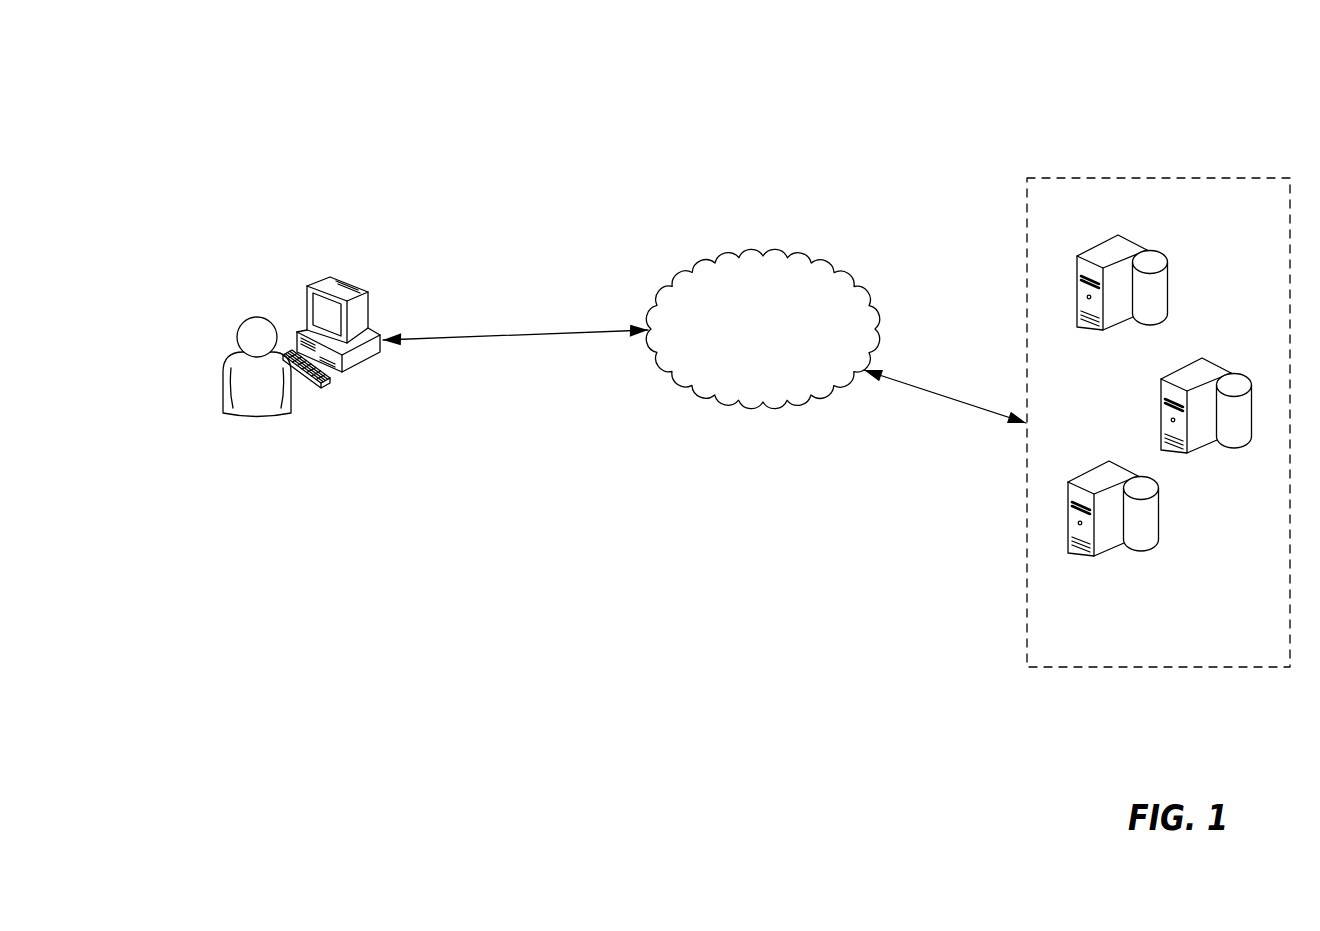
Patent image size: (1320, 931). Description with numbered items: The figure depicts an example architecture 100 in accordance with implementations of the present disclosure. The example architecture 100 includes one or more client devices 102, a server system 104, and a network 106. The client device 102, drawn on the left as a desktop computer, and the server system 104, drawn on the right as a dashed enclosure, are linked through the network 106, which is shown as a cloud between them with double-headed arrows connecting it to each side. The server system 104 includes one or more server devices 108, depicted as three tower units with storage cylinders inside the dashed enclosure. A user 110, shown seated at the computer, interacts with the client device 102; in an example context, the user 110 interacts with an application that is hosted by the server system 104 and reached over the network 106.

The architecture 100 is at (405, 108).
The client device 102 is at (306, 288).
The server system 104 is at (1160, 178).
The network 106 is at (766, 257).
The server device 108 is at (1168, 268).
The user 110 is at (243, 413).